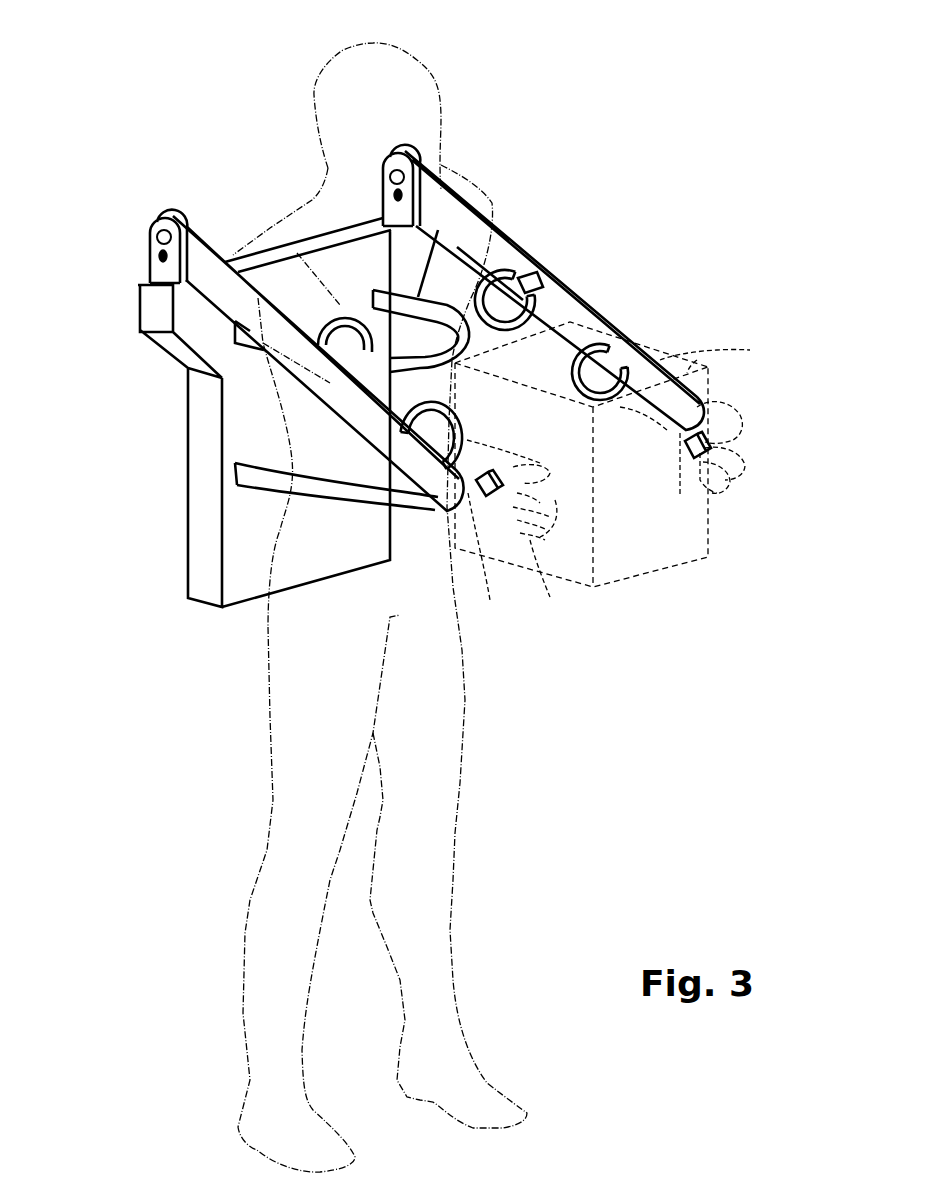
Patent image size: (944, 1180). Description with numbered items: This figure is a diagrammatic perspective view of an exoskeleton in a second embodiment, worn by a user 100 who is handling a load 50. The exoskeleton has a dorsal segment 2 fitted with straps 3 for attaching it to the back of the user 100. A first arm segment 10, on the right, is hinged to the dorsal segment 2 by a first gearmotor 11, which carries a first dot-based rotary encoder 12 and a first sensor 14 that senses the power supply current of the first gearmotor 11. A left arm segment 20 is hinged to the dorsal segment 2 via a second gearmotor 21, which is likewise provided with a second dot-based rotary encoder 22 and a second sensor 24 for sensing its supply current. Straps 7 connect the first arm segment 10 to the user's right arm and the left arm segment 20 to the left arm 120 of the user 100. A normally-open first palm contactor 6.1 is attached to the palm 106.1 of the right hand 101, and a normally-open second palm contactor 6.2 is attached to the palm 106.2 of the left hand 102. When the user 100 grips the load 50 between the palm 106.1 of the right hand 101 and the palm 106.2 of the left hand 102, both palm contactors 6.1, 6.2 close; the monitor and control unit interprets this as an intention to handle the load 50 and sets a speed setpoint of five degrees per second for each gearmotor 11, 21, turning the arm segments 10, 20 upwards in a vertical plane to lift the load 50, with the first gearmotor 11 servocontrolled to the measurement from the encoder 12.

The user 100 is at (466, 65).
The dorsal segment 2 is at (190, 470).
The straps 3 is at (458, 355).
The first palm contactor 6.1 is at (480, 500).
The second palm contactor 6.2 is at (690, 460).
The straps 7 is at (355, 310).
The first arm segment 10 is at (322, 375).
The first gearmotor 11 is at (163, 218).
The first dot-based rotary encoder 12 is at (155, 238).
The first sensor 14 is at (153, 256).
The left arm segment 20 is at (487, 228).
The second gearmotor 21 is at (398, 160).
The second dot-based rotary encoder 22 is at (387, 178).
The second sensor 24 is at (392, 195).
The load 50 is at (677, 362).
The right hand 101 is at (470, 512).
The left hand 102 is at (727, 427).
The palm of the right hand 106.1 is at (558, 603).
The palm of the left hand 106.2 is at (740, 462).
The left arm 120 is at (583, 293).